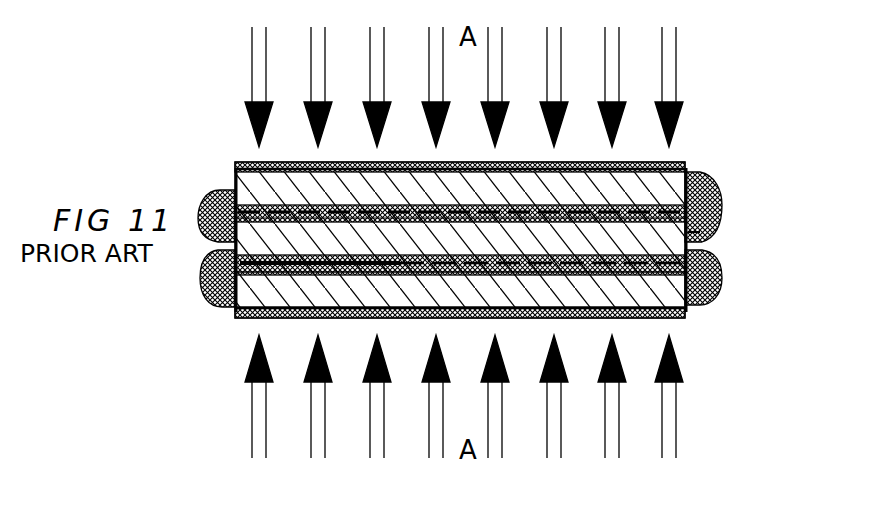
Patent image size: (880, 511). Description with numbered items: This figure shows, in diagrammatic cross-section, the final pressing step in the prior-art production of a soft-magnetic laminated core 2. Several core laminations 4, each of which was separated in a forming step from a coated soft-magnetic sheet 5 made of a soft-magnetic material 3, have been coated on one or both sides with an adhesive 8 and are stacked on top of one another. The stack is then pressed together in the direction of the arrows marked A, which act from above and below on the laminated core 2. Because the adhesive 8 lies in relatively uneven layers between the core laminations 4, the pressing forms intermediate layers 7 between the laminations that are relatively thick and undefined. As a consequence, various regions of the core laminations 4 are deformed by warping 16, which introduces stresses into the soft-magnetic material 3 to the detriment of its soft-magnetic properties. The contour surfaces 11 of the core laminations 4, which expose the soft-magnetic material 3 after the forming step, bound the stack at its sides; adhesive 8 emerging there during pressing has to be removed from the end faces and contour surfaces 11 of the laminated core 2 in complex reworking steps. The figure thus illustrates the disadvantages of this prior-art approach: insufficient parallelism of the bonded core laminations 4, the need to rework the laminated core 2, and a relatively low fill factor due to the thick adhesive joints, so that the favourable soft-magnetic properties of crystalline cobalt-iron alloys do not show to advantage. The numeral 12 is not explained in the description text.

The laminated core 2 is at (706, 158).
The soft-magnetic material 3 is at (234, 168).
The core laminations 4 is at (718, 232).
The soft-magnetic sheet 5 is at (235, 315).
The intermediate layers 7 is at (495, 210).
The adhesive 8 is at (207, 288).
The contour surfaces 11 is at (664, 162).
The end cap 12 is at (720, 200).
The warping 16 is at (380, 208).